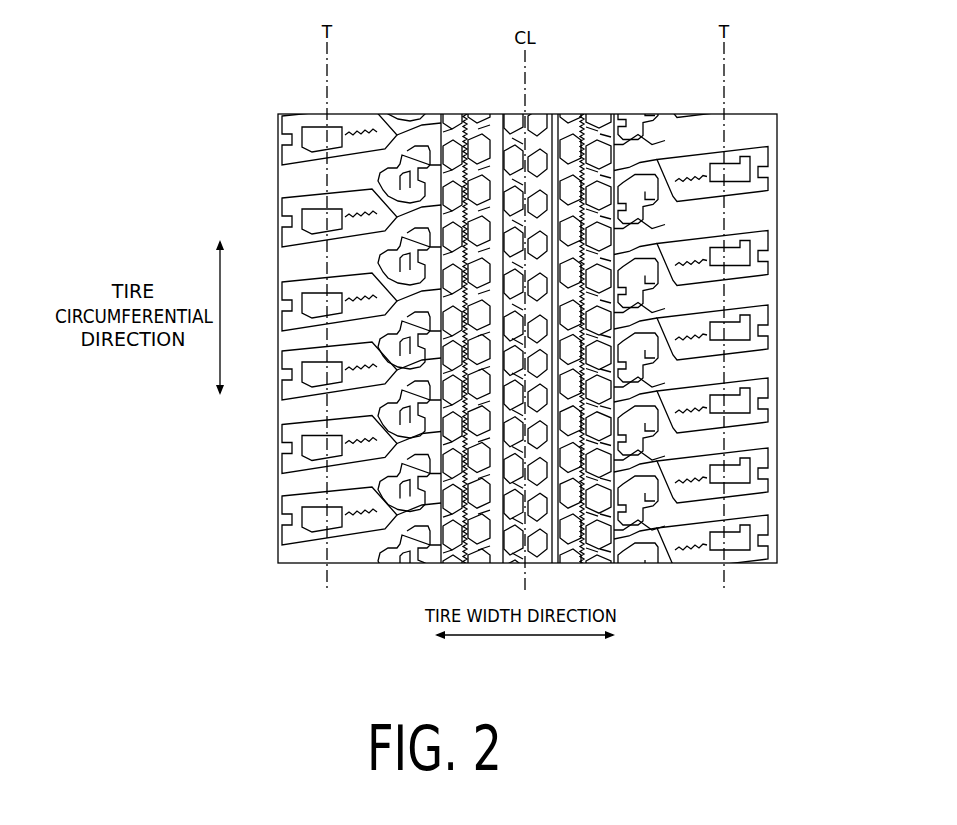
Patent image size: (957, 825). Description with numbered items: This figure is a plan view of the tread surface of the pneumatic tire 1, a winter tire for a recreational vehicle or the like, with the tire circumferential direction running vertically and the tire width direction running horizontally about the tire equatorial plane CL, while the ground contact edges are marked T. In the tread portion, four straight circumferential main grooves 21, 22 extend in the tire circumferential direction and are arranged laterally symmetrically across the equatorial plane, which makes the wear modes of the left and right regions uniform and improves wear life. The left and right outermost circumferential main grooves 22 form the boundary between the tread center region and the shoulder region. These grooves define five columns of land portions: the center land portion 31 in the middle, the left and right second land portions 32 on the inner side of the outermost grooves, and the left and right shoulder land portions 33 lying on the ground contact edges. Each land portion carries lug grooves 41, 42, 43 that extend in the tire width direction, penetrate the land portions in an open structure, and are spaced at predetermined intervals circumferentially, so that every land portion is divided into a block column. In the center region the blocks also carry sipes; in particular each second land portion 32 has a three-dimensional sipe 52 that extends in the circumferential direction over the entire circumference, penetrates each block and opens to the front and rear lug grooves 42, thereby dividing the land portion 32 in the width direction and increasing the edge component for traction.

The pneumatic tire 1 is at (691, 92).
The circumferential main groove 21 is at (530, 338).
The outermost circumferential main groove 22 is at (527, 338).
The center land portion 31 is at (525, 324).
The second land portion 32 is at (527, 320).
The shoulder land portion 33 is at (521, 319).
The lug groove 41 is at (523, 341).
The lug groove 42 is at (508, 262).
The lug groove 43 is at (525, 317).
The three-dimensional sipe 52 is at (526, 338).